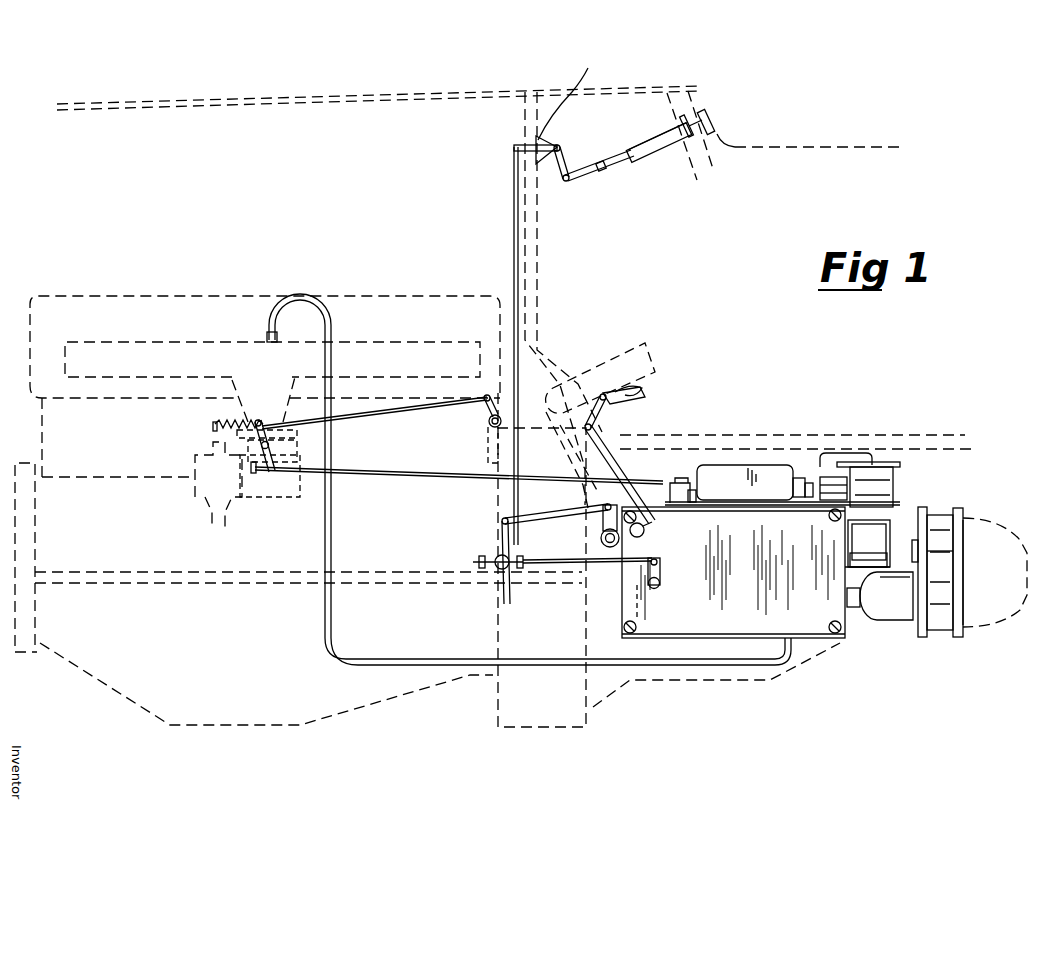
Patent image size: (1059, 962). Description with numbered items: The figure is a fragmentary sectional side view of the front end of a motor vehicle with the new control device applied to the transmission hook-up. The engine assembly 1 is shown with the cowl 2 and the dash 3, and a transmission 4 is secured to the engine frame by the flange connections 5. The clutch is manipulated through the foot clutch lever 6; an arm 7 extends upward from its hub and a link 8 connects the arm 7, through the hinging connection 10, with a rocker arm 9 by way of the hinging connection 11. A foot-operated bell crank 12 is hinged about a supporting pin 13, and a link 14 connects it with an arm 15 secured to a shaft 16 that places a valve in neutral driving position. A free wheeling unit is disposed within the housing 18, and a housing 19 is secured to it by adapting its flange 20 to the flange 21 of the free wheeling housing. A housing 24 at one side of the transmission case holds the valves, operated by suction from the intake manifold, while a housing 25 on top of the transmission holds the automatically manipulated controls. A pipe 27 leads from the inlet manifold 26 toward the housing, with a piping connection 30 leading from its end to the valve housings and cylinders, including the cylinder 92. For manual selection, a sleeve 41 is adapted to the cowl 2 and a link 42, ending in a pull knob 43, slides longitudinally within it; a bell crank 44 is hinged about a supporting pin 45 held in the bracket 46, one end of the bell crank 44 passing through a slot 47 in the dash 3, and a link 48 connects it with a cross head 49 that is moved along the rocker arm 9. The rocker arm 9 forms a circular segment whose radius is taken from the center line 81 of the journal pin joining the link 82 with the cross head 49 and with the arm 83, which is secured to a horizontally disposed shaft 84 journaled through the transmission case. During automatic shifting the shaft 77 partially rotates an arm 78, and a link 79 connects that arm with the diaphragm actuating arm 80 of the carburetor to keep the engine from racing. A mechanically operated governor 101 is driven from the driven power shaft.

The engine assembly 1 is at (88, 713).
The cowl 2 is at (688, 112).
The dash 3 is at (538, 235).
The transmission 4 is at (720, 682).
The flange connections 5 is at (593, 717).
The foot clutch lever 6 is at (603, 363).
The arm 7 is at (606, 520).
The link 8 is at (538, 515).
The rocker arm 9 is at (498, 533).
The hinging connection 10 is at (638, 498).
The hinging connection 11 is at (488, 453).
The bell crank 12 is at (640, 404).
The supporting pin 13 is at (618, 397).
The link 14 is at (617, 468).
The arm 15 is at (648, 528).
The shaft 16 is at (642, 536).
The free wheeling housing 18 is at (900, 520).
The housing 19 is at (962, 537).
The flange 20 is at (925, 551).
The flange 21 is at (918, 633).
The housing 24 is at (705, 632).
The housing 25 is at (762, 470).
The inlet manifold 26 is at (165, 348).
The pipe 27 is at (338, 510).
The piping connection 30 is at (850, 577).
The sleeve 41 is at (643, 157).
The link 42 is at (607, 171).
The pull knob 43 is at (715, 132).
The bell crank 44 is at (566, 160).
The supporting pin 45 is at (571, 123).
The bracket 46 is at (576, 98).
The slot 47 is at (527, 139).
The link 48 is at (513, 232).
The cross head 49 is at (492, 578).
The shaft 77 is at (697, 497).
The arm 78 is at (683, 483).
The link 79 is at (390, 470).
The diaphragm actuating arm 80 is at (270, 473).
The center line 81 is at (661, 572).
The link 82 is at (611, 566).
The arm 83 is at (634, 600).
The shaft 84 is at (661, 590).
The cylinder 92 is at (883, 537).
The governor 101 is at (888, 610).